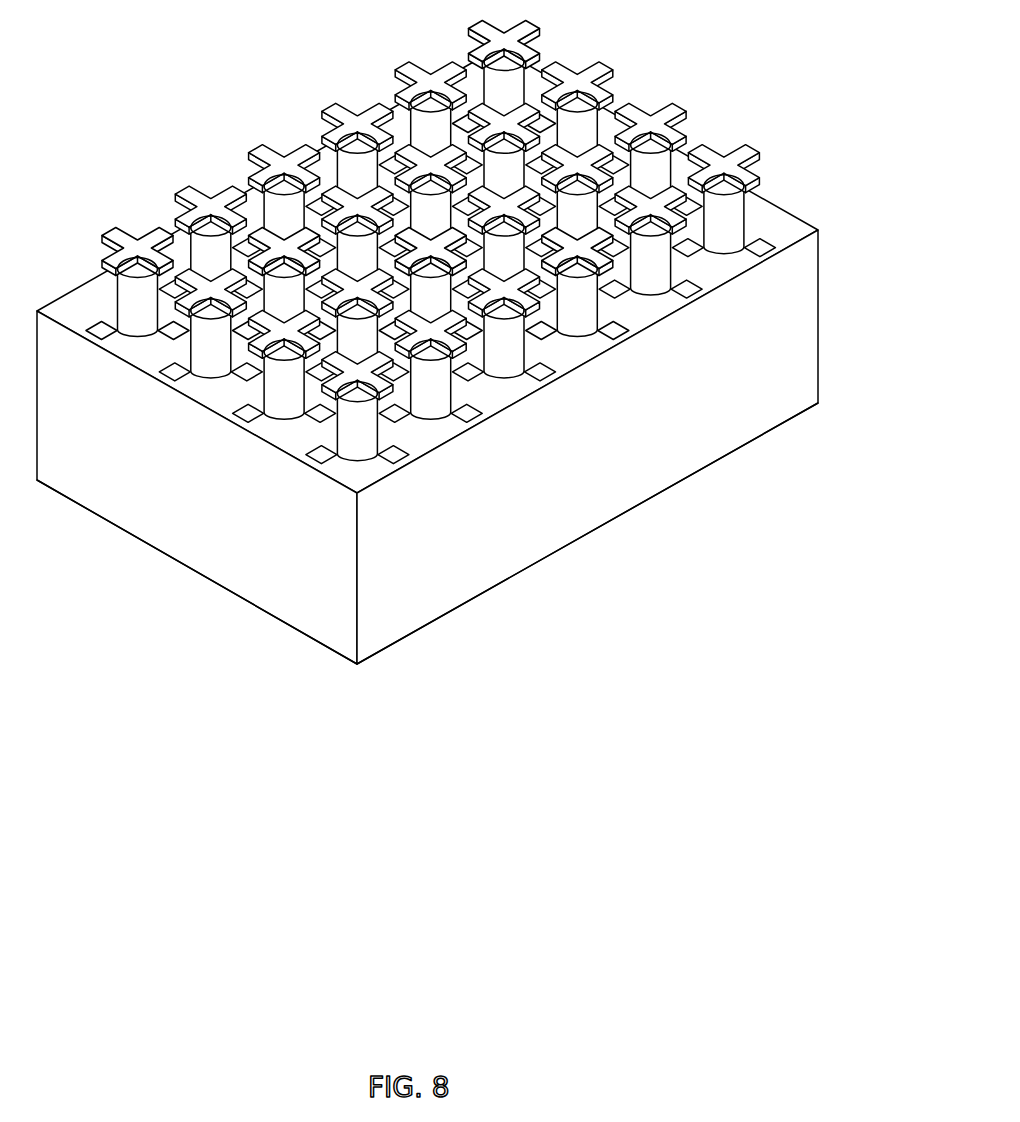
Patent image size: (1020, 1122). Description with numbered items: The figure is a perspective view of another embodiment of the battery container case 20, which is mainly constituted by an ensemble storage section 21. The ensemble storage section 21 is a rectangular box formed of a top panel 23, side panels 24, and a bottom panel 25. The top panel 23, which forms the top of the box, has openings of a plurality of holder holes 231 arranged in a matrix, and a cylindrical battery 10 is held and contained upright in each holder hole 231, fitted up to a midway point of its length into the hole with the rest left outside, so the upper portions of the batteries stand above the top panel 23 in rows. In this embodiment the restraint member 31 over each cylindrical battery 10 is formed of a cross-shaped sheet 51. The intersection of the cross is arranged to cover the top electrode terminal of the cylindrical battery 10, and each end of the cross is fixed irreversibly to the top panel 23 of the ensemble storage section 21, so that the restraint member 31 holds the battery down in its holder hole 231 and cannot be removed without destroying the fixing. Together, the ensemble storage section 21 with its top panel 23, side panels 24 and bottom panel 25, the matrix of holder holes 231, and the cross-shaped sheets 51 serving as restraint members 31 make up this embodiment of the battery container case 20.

The cylindrical battery 10 is at (722, 214).
The battery container case 20 is at (464, 378).
The ensemble storage section 21 is at (577, 483).
The top panel 23 is at (464, 270).
The holder hole 231 is at (656, 278).
The side panel 24 is at (197, 487).
The bottom panel 25 is at (420, 607).
The cross-shaped sheet 51 is at (668, 117).
The restraint member 31 is at (717, 155).